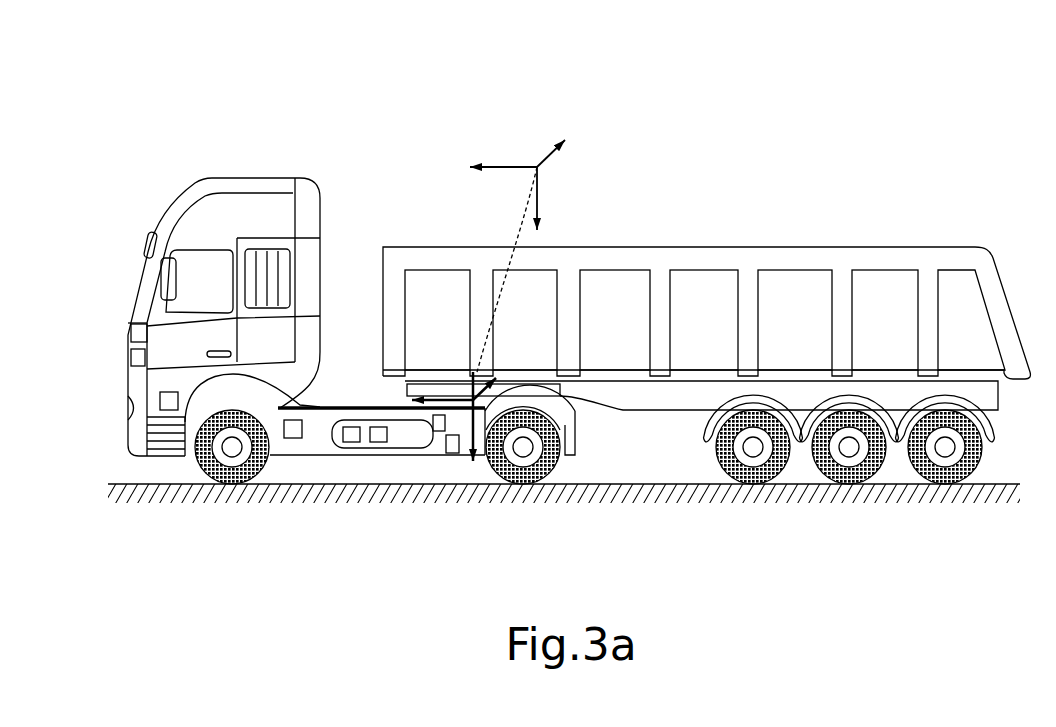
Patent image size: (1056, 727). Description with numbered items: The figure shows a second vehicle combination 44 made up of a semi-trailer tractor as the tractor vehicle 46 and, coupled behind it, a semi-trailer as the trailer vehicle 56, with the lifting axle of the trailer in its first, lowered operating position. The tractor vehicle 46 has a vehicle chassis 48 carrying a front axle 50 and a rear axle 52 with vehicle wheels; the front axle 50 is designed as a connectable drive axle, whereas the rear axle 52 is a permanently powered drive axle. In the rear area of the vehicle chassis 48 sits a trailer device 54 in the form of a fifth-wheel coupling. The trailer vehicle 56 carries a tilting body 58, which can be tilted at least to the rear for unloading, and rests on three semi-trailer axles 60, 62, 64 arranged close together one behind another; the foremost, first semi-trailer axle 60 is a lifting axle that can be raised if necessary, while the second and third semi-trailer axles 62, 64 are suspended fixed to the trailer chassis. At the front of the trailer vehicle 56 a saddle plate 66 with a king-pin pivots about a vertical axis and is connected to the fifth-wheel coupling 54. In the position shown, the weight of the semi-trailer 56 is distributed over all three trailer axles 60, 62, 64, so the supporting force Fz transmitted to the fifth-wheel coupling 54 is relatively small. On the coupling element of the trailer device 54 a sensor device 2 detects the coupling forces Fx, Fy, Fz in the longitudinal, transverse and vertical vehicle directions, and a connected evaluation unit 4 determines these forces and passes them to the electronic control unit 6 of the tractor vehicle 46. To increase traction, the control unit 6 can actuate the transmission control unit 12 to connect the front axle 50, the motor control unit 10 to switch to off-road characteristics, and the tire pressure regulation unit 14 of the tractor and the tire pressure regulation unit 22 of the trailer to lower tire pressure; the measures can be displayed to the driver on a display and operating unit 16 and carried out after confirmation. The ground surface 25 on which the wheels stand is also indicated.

The sensor device 2 is at (449, 454).
The evaluation unit 4 is at (437, 432).
The electronic control unit 6 is at (127, 352).
The motor control unit 10 is at (170, 411).
The transmission control unit 12 is at (290, 439).
The tire pressure regulation unit 14 is at (351, 443).
The display and operating unit 16 is at (137, 320).
The tire pressure regulation unit 22 is at (378, 443).
The road surface 25 is at (118, 484).
The second vehicle combination 44 is at (447, 152).
The tractor vehicle 46 is at (260, 152).
The vehicle chassis 48 is at (368, 406).
The front axle 50 is at (225, 462).
The rear axle 52 is at (523, 458).
The trailer device 54 is at (464, 456).
The trailer vehicle 56 is at (684, 152).
The tilting body 58 is at (705, 245).
The first semi-trailer axle 60 is at (753, 458).
The second semi-trailer axle 62 is at (849, 458).
The third semi-trailer axle 64 is at (945, 458).
The saddle plate 66 is at (465, 390).